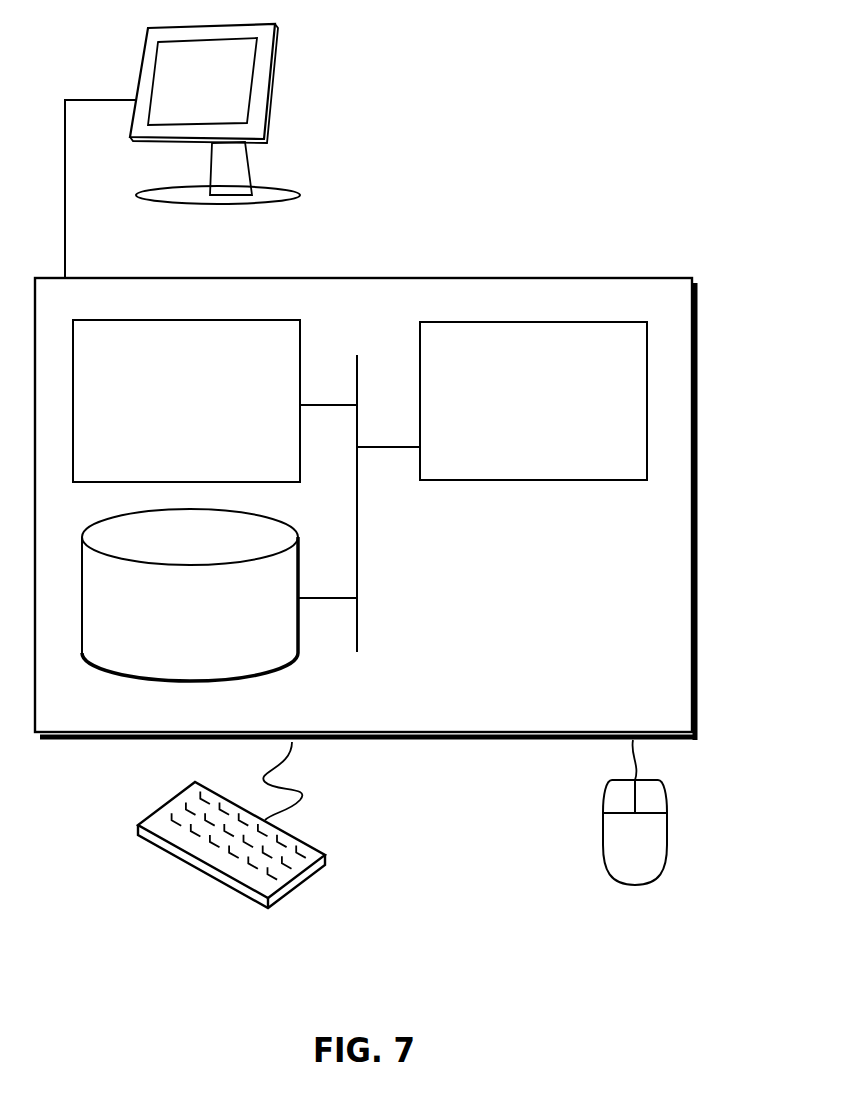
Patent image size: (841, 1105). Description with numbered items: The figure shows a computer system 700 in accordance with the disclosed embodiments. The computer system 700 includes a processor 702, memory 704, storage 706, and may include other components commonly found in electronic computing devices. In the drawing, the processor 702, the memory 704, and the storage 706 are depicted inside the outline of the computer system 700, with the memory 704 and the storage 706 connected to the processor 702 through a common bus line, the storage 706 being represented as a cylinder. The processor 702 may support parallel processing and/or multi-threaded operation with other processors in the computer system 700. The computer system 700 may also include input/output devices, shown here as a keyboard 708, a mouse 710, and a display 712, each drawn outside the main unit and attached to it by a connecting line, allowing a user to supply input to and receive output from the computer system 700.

The computer system 700 is at (410, 257).
The processor 702 is at (515, 413).
The memory 704 is at (166, 412).
The storage 706 is at (171, 625).
The keyboard 708 is at (157, 845).
The mouse 710 is at (613, 855).
The display 712 is at (182, 151).